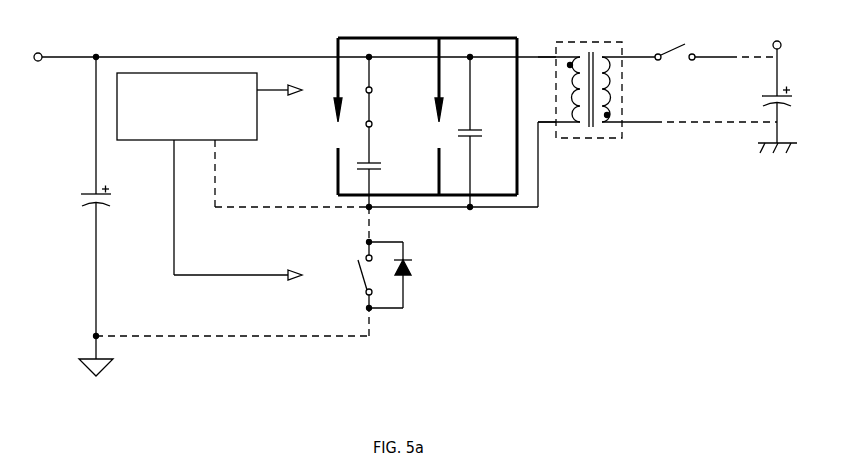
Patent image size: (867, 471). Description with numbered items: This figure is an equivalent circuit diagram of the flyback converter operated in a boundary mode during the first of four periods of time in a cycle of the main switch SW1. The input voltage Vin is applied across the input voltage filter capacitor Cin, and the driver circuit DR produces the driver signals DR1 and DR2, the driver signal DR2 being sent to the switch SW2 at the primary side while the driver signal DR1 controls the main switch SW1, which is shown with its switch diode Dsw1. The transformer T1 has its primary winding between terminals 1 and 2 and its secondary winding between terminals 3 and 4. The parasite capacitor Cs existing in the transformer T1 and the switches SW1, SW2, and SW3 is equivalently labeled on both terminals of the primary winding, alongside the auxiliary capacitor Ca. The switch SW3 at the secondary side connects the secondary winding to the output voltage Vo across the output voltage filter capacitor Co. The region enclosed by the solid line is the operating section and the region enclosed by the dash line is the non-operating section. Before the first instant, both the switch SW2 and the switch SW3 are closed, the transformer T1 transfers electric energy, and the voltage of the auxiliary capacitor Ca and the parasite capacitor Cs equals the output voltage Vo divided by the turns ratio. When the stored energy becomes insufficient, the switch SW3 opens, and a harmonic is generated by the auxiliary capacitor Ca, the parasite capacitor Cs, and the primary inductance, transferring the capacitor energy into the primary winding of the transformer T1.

The input voltage Vin is at (38, 47).
The input voltage filter capacitor Cin is at (109, 199).
The driver circuit DR is at (187, 106).
The driver signal DR1 is at (241, 210).
The driver signal DR2 is at (283, 103).
The main switch SW1 is at (350, 275).
The switch diode Dsw1 is at (416, 275).
The switch at the primary side SW2 is at (389, 110).
The auxiliary capacitor Ca is at (382, 181).
The parasite capacitor Cs is at (481, 132).
The transformer T1 is at (589, 78).
The transformer primary terminal 1 is at (547, 47).
The transformer primary terminal 2 is at (547, 112).
The transformer secondary terminal 3 is at (628, 47).
The transformer secondary terminal 4 is at (628, 116).
The switch at the secondary side SW3 is at (716, 42).
The output voltage Vo is at (785, 59).
The output voltage filter capacitor Co is at (790, 115).